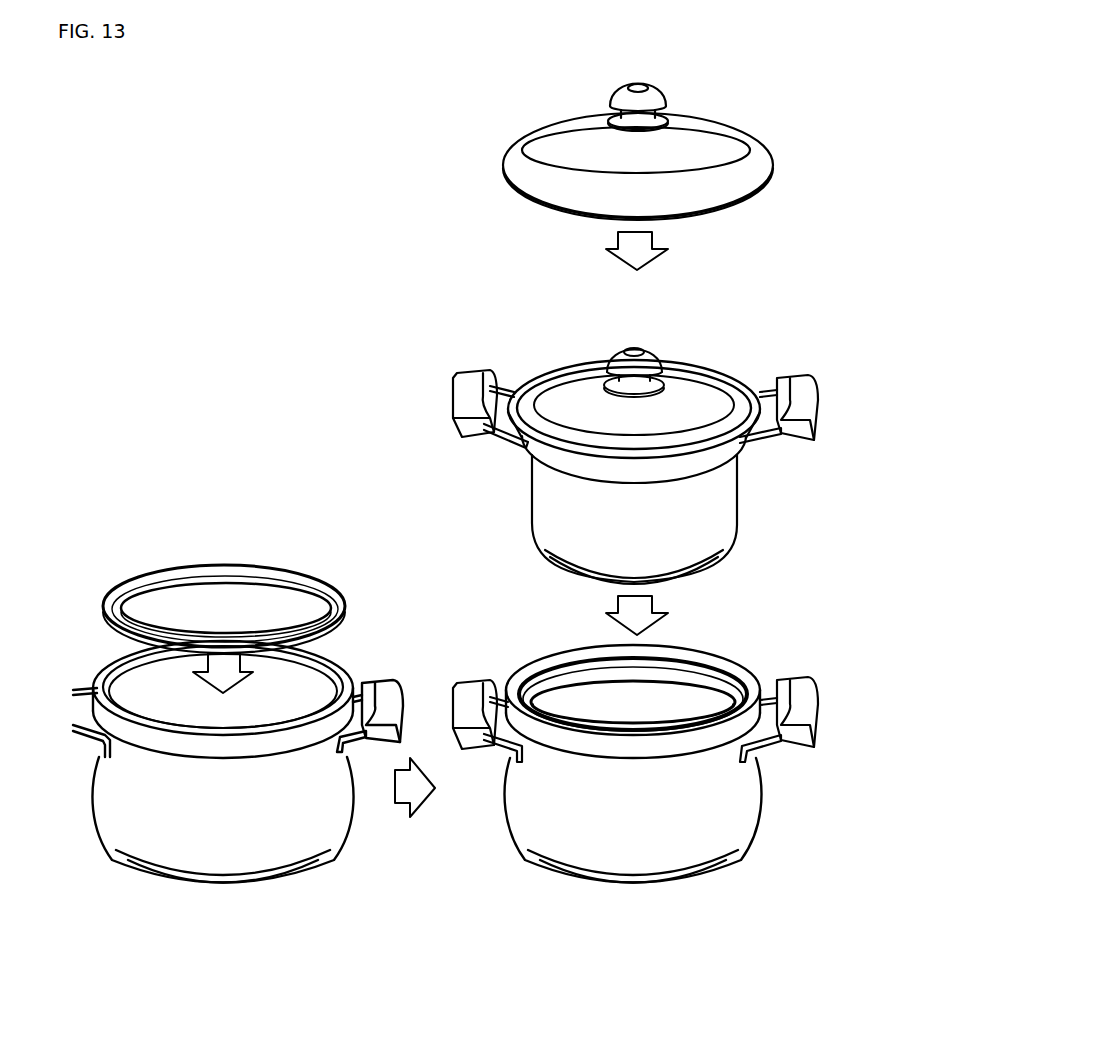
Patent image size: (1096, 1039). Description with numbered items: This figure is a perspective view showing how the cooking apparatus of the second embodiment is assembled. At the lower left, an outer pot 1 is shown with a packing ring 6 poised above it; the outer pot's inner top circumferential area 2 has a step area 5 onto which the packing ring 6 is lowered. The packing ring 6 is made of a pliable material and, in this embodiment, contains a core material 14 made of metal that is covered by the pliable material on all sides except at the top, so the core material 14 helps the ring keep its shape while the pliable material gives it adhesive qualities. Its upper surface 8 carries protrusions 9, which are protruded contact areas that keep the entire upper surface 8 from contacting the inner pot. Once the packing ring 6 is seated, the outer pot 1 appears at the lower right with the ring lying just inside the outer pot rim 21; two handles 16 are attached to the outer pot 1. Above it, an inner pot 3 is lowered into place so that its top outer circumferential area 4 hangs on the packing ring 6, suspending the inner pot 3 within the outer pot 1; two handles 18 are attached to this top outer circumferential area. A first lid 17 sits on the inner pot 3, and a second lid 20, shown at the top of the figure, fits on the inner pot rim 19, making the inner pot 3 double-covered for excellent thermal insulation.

The outer pot 1 is at (507, 803).
The inner top circumferential area 2 is at (120, 668).
The inner pot 3 is at (737, 501).
The top outer circumferential area 4 is at (553, 459).
The step area 5 is at (336, 686).
The packing ring 6 is at (347, 620).
The upper surface 8 is at (246, 564).
The protrusions 9 is at (302, 590).
The core material 14 is at (337, 595).
The handles 16 is at (782, 689).
The first lid 17 is at (707, 390).
The handles 18 is at (787, 384).
The inner pot rim 19 is at (555, 361).
The second lid 20 is at (720, 130).
The outer pot rim 21 is at (546, 652).